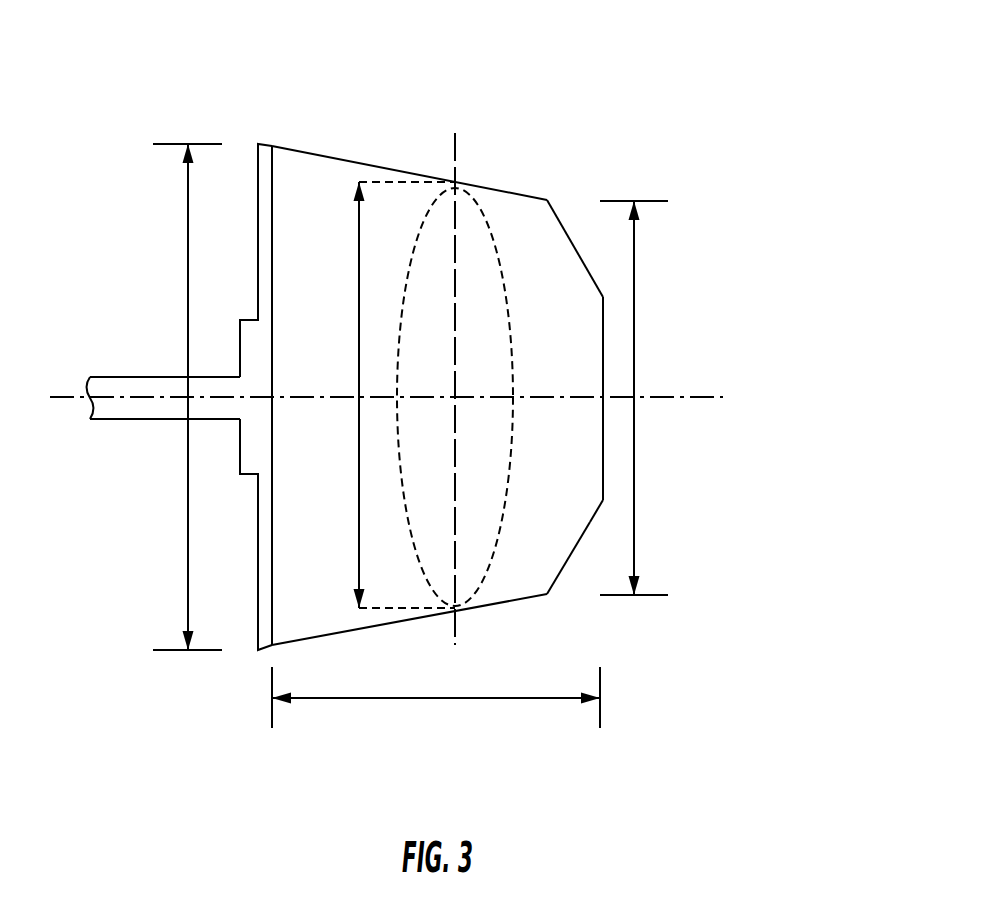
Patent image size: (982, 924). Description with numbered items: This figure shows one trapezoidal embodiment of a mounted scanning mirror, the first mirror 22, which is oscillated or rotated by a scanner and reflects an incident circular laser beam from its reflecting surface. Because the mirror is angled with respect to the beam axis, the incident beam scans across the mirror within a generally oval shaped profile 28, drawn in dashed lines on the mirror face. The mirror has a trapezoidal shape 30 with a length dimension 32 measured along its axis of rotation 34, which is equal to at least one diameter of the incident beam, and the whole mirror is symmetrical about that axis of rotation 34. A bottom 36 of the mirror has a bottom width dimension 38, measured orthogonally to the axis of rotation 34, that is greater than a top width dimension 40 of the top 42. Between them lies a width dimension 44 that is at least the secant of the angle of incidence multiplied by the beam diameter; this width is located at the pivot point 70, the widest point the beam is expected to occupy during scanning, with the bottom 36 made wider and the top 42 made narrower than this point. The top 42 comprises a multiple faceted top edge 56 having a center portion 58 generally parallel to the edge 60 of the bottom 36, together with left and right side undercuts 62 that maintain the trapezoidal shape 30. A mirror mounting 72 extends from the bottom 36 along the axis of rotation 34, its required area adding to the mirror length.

The first mirror 22 is at (451, 91).
The oval shaped profile 28 is at (415, 578).
The trapezoidal shape 30 is at (572, 180).
The length dimension 32 is at (485, 698).
The axis of rotation 34 is at (680, 397).
The bottom 36 is at (283, 612).
The bottom width dimension 38 is at (188, 320).
The top width dimension 40 is at (634, 308).
The top 42 is at (605, 510).
The width dimension 44 is at (357, 265).
The multiple faceted top edge 56 is at (620, 446).
The center portion 58 is at (603, 357).
The edge 60 is at (272, 530).
The left and right side undercuts 62 is at (580, 252).
The pivot point 70 is at (455, 182).
The mirror mounting 72 is at (221, 405).